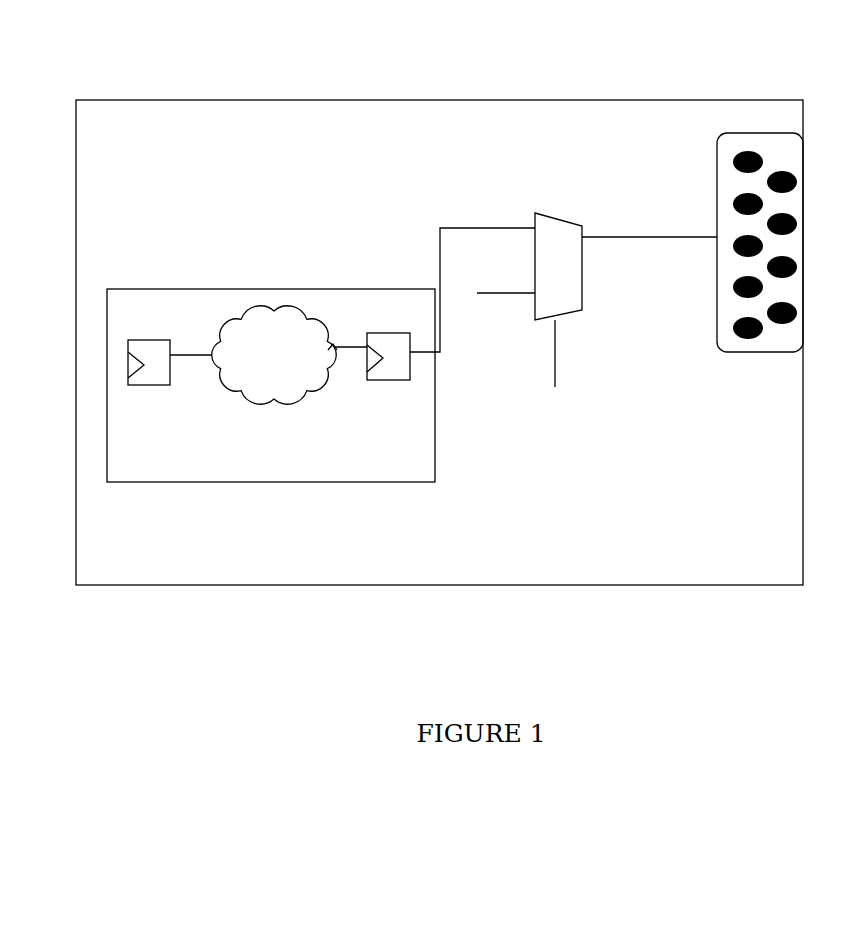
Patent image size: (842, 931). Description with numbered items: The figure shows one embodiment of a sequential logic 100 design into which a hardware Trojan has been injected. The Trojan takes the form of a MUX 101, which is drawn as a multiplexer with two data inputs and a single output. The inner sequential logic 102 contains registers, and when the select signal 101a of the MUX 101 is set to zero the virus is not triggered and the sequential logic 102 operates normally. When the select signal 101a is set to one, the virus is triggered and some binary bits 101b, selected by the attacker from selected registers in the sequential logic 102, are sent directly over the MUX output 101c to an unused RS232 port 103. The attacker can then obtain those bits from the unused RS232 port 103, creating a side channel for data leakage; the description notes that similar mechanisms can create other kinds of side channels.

The sequential logic 100 is at (439, 358).
The MUX 101 is at (548, 214).
The select signal 101a is at (564, 372).
The binary bits 101b is at (472, 276).
The Trojan output to unused port 101c is at (649, 252).
The sequential logic 102 is at (271, 385).
The unused RS232 port 103 is at (760, 184).